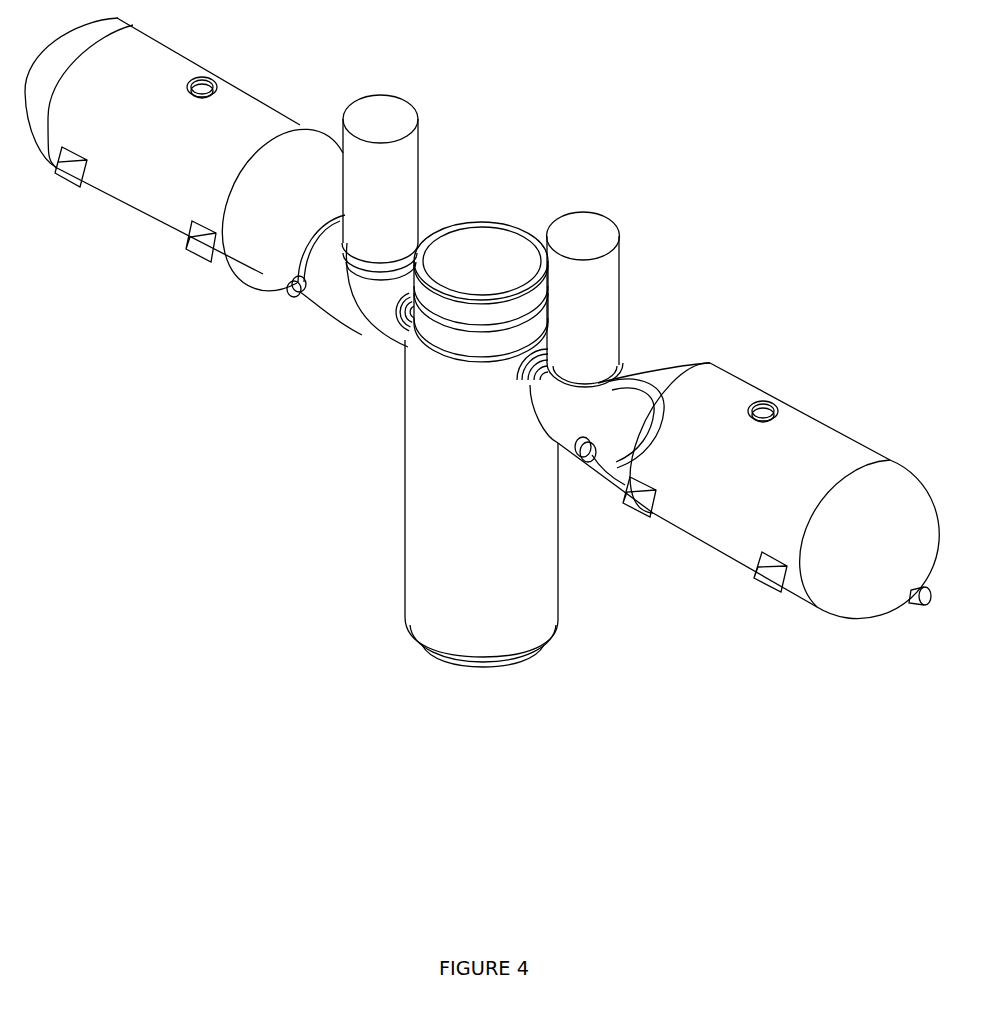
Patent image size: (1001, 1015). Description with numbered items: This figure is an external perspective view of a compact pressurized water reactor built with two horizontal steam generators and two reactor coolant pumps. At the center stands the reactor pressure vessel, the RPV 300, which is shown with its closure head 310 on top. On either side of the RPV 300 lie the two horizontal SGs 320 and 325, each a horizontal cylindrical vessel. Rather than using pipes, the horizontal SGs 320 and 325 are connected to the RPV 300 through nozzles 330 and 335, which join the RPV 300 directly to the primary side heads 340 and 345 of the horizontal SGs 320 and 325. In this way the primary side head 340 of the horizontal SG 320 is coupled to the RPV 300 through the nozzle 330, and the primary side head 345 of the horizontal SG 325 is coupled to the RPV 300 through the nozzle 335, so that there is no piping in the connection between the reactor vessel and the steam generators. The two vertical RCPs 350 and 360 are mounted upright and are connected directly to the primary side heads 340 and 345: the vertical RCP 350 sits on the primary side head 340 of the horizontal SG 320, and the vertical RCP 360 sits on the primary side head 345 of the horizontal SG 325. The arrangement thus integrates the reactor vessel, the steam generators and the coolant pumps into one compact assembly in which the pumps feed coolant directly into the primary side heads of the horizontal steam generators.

The RPV 300 is at (440, 527).
The closure head 310 is at (510, 253).
The horizontal SG 320 is at (727, 515).
The horizontal SG 325 is at (176, 195).
The nozzle 330 is at (528, 373).
The nozzle 335 is at (405, 303).
The primary side head 340 is at (567, 412).
The primary side head 345 is at (338, 287).
The vertical RCP 350 is at (600, 302).
The vertical RCP 360 is at (407, 168).